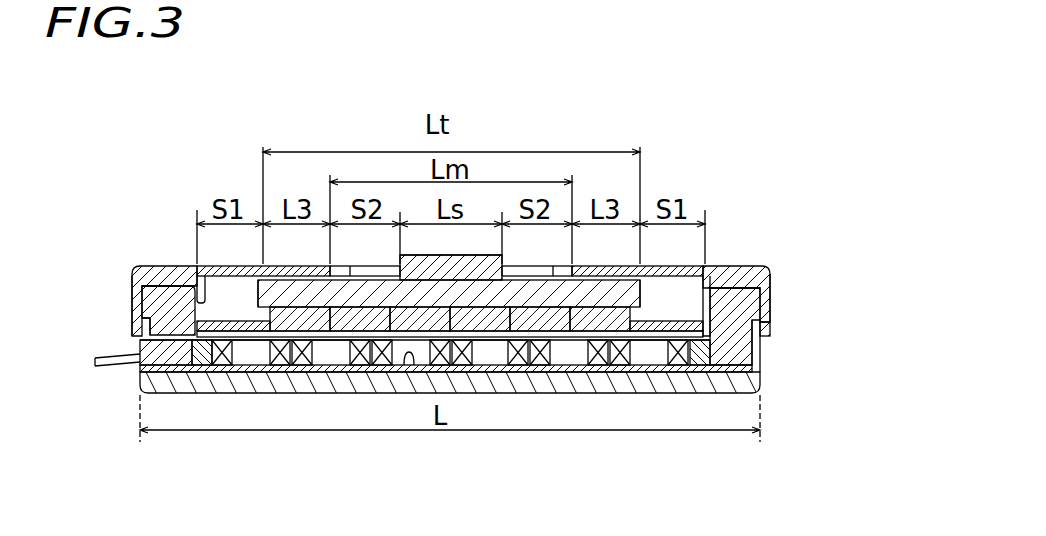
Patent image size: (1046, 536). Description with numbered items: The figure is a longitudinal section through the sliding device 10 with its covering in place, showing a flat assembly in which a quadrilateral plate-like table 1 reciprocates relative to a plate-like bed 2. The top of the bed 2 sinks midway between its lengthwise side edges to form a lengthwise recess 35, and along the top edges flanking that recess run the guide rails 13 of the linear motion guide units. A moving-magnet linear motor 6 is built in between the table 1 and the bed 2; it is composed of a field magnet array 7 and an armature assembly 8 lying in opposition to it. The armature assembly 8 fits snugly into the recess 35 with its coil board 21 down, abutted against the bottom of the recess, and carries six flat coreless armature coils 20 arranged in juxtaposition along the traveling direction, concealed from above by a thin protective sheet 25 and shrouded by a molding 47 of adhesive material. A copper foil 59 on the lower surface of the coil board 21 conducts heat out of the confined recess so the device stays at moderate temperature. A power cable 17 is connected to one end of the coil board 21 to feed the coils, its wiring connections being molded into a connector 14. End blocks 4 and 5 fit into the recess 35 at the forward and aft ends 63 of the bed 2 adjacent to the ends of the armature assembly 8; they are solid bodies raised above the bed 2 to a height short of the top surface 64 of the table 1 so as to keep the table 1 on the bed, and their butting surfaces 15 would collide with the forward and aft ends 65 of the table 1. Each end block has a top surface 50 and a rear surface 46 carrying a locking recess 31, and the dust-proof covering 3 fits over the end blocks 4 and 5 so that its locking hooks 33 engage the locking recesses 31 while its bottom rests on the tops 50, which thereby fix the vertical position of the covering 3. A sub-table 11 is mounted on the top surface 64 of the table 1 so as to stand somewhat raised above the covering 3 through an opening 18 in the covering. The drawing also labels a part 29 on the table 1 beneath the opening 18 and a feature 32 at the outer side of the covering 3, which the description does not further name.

The table 1 is at (292, 292).
The bed 2 is at (668, 356).
The dust-proof covering 3 is at (612, 277).
The end block 4 is at (165, 301).
The end block 5 is at (728, 281).
The moving-magnet linear motor 6 is at (488, 388).
The field magnet array 7 is at (582, 328).
The armature assembly 8 is at (328, 346).
The sliding device 10 is at (437, 220).
The sub-table 11 is at (462, 256).
The guide rail 13 is at (243, 338).
The connector 14 is at (150, 348).
The butting surface 15 is at (200, 285).
The power cable 17 is at (96, 364).
The opening 18 is at (368, 277).
The coreless armature coils 20 is at (383, 356).
The coil board 21 is at (262, 346).
The protective sheet 25 is at (645, 351).
The projection 29 is at (425, 256).
The locking recess 31 is at (143, 323).
The outer wall 32 is at (120, 304).
The locking hook 33 is at (770, 329).
The lengthwise recess 35 is at (412, 365).
The rear surface 46 is at (143, 305).
The molding 47 is at (202, 346).
The top surface 50 is at (180, 303).
The copper foil 59 is at (527, 358).
The forward and aft ends 63 is at (165, 393).
The top surface 64 is at (590, 281).
The forward and aft ends 65 is at (260, 293).